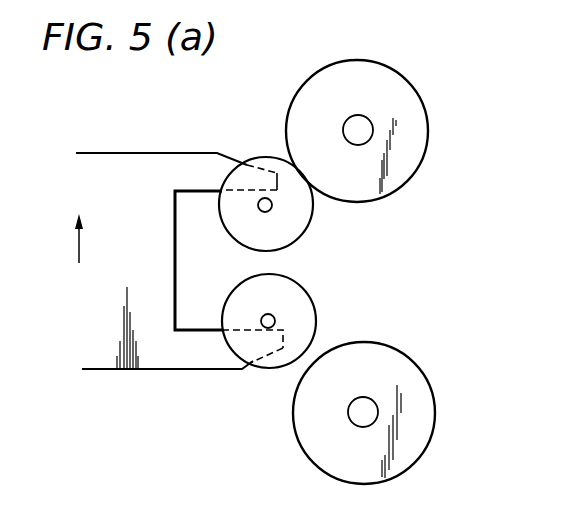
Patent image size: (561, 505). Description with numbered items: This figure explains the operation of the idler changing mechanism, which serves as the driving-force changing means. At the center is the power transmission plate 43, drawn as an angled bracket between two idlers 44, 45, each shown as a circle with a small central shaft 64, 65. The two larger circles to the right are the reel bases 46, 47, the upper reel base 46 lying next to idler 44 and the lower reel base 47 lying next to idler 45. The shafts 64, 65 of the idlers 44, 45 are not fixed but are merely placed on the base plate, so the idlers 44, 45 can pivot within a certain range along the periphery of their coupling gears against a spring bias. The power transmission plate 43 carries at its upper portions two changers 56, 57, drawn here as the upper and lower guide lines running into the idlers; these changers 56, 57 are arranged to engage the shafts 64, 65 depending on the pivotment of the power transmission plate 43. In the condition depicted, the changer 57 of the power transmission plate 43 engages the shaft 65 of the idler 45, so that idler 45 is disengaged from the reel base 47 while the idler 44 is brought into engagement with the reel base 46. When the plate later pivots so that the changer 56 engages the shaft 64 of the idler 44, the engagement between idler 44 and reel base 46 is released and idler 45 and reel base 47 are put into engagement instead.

The power transmission plate 43 is at (175, 263).
The idler 44 is at (312, 214).
The idler 45 is at (313, 323).
The reel base 46 is at (426, 113).
The reel base 47 is at (433, 390).
The changer 56 is at (177, 161).
The changer 57 is at (205, 358).
The shaft of idler 64 is at (271, 210).
The shaft of idler 65 is at (274, 316).